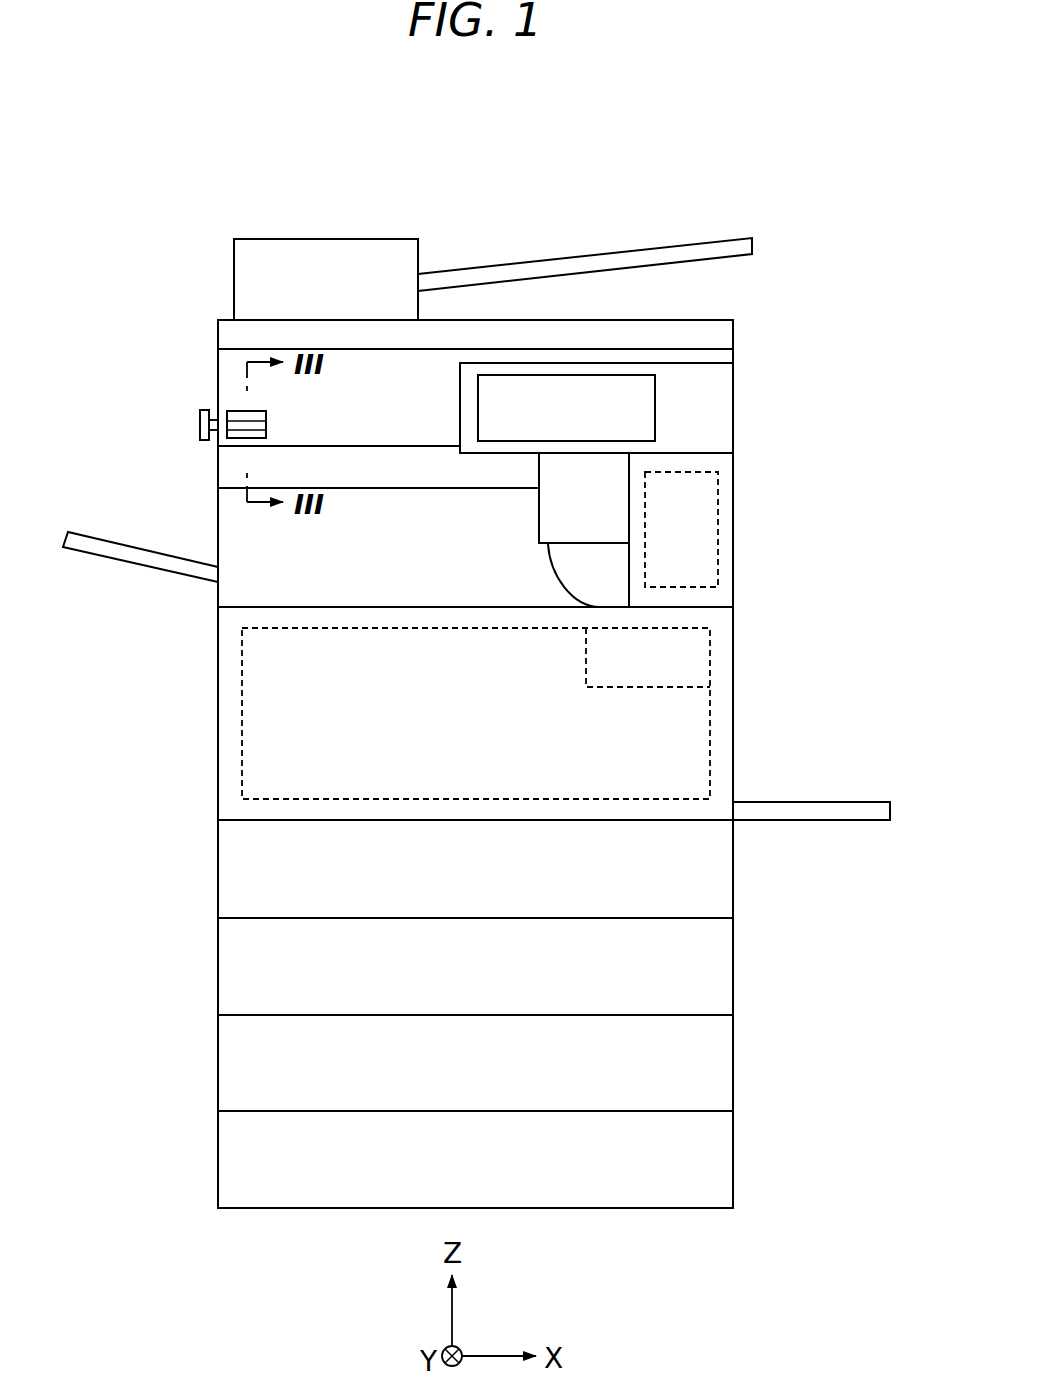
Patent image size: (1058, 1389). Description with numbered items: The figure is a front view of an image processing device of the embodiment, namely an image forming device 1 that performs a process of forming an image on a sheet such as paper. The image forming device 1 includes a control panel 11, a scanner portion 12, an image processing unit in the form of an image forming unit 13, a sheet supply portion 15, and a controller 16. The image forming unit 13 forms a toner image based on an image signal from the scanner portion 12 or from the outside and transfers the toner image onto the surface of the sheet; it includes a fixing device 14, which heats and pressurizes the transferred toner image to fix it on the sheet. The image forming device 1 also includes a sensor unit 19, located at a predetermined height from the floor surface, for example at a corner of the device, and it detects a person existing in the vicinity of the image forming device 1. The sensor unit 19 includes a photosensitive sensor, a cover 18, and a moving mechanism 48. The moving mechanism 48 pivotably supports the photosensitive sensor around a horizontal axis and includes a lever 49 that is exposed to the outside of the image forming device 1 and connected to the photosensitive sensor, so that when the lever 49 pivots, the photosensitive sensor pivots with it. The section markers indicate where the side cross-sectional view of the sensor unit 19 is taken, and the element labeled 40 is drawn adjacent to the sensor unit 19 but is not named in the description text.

The image forming device 1 is at (757, 171).
The control panel 11 is at (708, 398).
The scanner portion 12 is at (370, 347).
The image forming unit 13 is at (242, 707).
The fixing device 14 is at (678, 688).
The sheet supply portion 15 is at (253, 868).
The controller 16 is at (718, 525).
The cover 18 is at (348, 377).
The sensor unit 19 is at (202, 390).
The sensor unit 40 is at (237, 406).
The moving mechanism 48 is at (197, 402).
The lever 49 is at (200, 427).